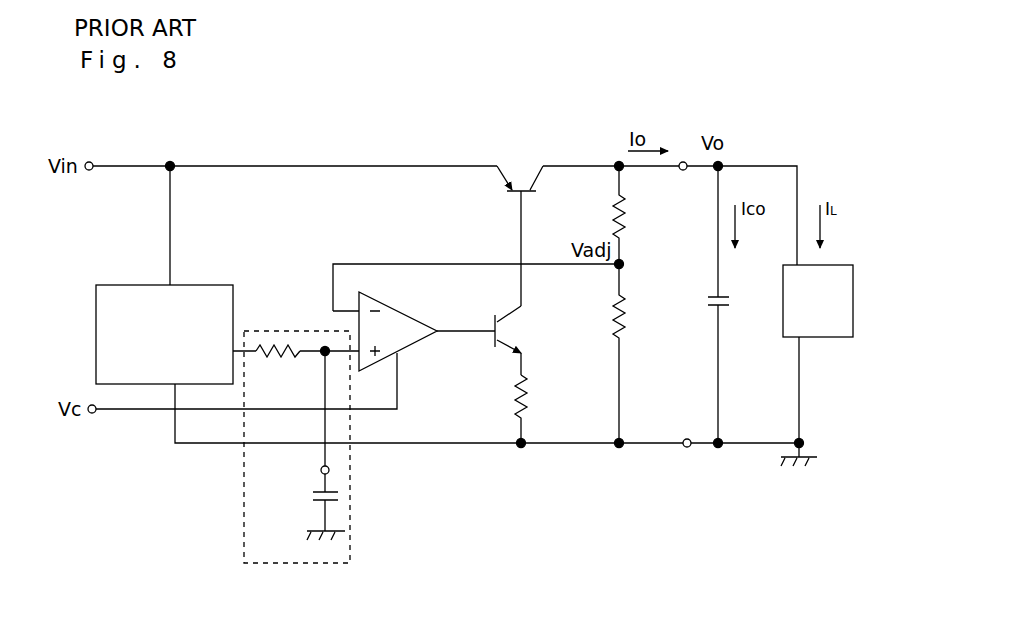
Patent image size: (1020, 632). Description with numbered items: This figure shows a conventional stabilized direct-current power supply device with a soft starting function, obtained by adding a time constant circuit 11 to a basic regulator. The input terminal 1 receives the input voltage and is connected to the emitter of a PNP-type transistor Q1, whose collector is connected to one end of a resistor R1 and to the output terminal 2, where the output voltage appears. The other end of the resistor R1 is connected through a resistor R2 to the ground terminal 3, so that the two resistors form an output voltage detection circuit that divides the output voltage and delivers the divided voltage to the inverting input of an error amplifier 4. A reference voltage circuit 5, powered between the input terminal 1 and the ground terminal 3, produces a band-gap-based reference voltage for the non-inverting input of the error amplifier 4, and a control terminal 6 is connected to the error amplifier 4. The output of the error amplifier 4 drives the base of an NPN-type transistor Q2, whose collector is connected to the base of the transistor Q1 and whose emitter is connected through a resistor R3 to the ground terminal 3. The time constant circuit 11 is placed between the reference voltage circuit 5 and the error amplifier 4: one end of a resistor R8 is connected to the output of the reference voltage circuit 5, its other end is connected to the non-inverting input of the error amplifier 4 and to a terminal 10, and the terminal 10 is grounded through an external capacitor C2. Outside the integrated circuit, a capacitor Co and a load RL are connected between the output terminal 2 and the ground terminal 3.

The input terminal 1 is at (91, 162).
The output terminal 2 is at (683, 171).
The ground terminal 3 is at (687, 439).
The error amplifier 4 is at (405, 301).
The reference voltage circuit 5 is at (211, 285).
The control terminal 6 is at (88, 405).
The terminal 10 is at (320, 470).
The time constant circuit 11 is at (291, 329).
The PNP-type transistor Q1 is at (518, 162).
The NPN-type transistor Q2 is at (525, 334).
The resistor R1 is at (628, 220).
The resistor R2 is at (628, 315).
The resistor R3 is at (538, 382).
The resistor R8 is at (279, 358).
The capacitor C2 is at (313, 497).
The capacitor Co is at (737, 306).
The load RL is at (854, 301).